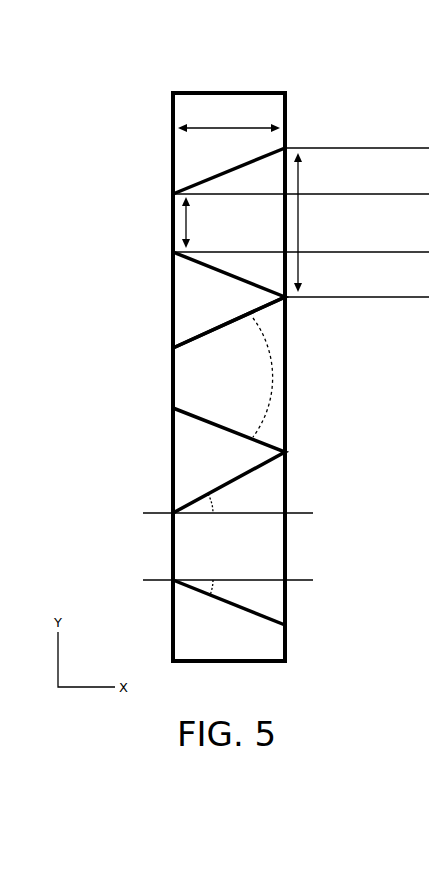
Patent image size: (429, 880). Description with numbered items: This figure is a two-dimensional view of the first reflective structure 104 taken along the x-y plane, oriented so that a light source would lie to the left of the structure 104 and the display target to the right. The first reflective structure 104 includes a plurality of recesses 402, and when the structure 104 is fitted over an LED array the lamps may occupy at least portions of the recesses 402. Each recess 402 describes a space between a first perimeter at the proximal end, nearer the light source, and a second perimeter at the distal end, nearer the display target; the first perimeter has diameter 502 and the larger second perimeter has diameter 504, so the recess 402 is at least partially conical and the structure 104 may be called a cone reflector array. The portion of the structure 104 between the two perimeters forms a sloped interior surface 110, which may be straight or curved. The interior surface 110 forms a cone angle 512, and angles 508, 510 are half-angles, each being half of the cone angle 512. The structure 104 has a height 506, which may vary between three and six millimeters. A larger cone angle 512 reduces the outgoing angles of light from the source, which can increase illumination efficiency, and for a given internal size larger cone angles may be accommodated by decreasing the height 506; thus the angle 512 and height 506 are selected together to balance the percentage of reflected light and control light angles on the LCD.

The first reflective structure 104 is at (200, 108).
The interior surface 110 is at (201, 352).
The recess 402 is at (214, 387).
The diameter 502 is at (186, 224).
The diameter 504 is at (300, 230).
The height 506 is at (214, 130).
The angle 508 is at (213, 508).
The angle 510 is at (213, 592).
The angle 512 is at (271, 385).